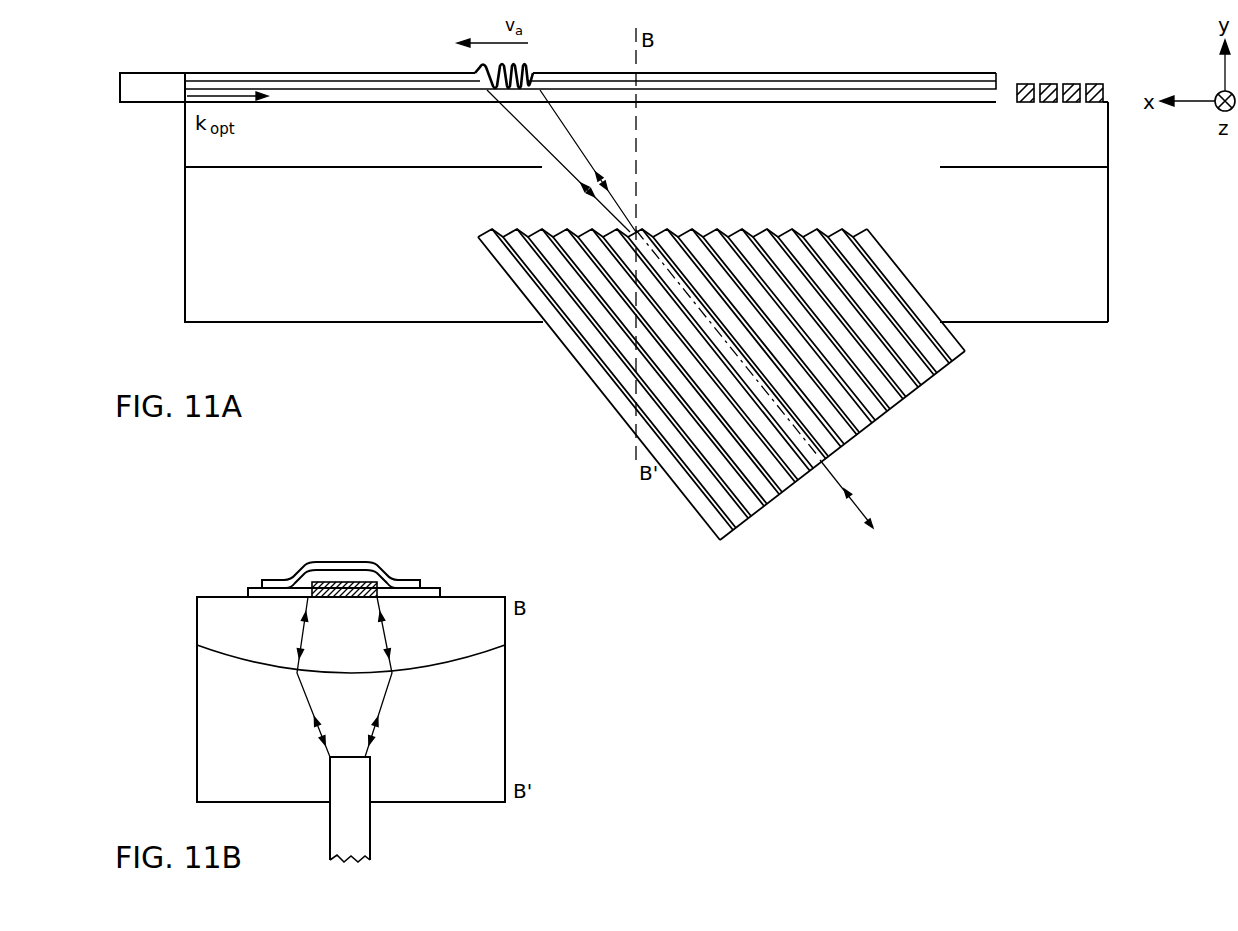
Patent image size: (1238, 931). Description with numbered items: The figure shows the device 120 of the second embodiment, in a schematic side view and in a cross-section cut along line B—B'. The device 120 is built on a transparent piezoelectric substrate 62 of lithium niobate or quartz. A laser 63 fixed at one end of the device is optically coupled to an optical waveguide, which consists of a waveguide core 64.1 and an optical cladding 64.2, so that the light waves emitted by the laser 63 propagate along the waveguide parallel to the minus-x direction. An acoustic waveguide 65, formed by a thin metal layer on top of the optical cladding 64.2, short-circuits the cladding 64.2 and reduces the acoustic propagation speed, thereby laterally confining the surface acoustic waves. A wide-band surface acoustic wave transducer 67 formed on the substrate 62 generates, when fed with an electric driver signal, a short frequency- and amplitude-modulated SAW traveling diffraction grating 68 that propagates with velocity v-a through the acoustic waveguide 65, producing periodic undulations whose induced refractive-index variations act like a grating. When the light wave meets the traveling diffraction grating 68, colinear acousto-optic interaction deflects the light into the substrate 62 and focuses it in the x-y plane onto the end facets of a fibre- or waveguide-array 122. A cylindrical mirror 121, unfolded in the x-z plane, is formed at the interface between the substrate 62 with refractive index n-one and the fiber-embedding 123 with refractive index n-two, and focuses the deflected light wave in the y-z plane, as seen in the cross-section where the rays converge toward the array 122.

In FIG. 11A, the substrate 62 is at (646, 134).
In FIG. 11B, the substrate 62 is at (351, 621).
In FIG. 11A, the laser 63 is at (152, 82).
In FIG. 11A, the waveguide core 64.1 is at (897, 97).
In FIG. 11B, the waveguide core 64.1 is at (330, 582).
In FIG. 11A, the optical cladding 64.2 is at (815, 87).
In FIG. 11B, the optical cladding 64.2 is at (430, 590).
In FIG. 11A, the acoustic waveguide 65 is at (755, 78).
In FIG. 11B, the acoustic waveguide 65 is at (373, 568).
In FIG. 11A, the surface acoustic wave wide-band transducer 67 is at (1043, 85).
In FIG. 11A, the SAW traveling diffraction grating 68 is at (524, 65).
In FIG. 11A, the device 120 is at (1159, 352).
In FIG. 11A, the cylindrical mirror 121 is at (1070, 170).
In FIG. 11B, the cylindrical mirror 121 is at (458, 662).
In FIG. 11A, the fibre- or waveguide-array 122 is at (937, 336).
In FIG. 11B, the fibre- or waveguide-array 122 is at (352, 828).
In FIG. 11A, the fiber-embedding 123 is at (646, 244).
In FIG. 11B, the fiber-embedding 123 is at (351, 723).